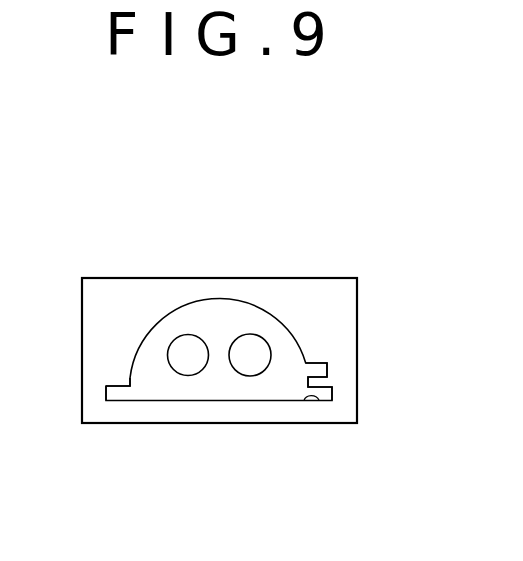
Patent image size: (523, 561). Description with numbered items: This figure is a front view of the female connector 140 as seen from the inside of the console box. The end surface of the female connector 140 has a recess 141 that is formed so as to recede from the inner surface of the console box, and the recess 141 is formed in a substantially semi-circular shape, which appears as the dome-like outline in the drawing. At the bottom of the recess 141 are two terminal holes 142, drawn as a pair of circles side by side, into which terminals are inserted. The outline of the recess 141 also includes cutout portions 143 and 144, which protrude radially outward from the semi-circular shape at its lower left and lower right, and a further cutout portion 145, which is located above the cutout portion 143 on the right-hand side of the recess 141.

The female connector 140 is at (334, 267).
The recess 141 is at (217, 299).
The terminal holes 142 is at (186, 367).
The cutout portion 143 is at (318, 401).
The cutout portion 144 is at (126, 388).
The cutout portion 145 is at (320, 365).